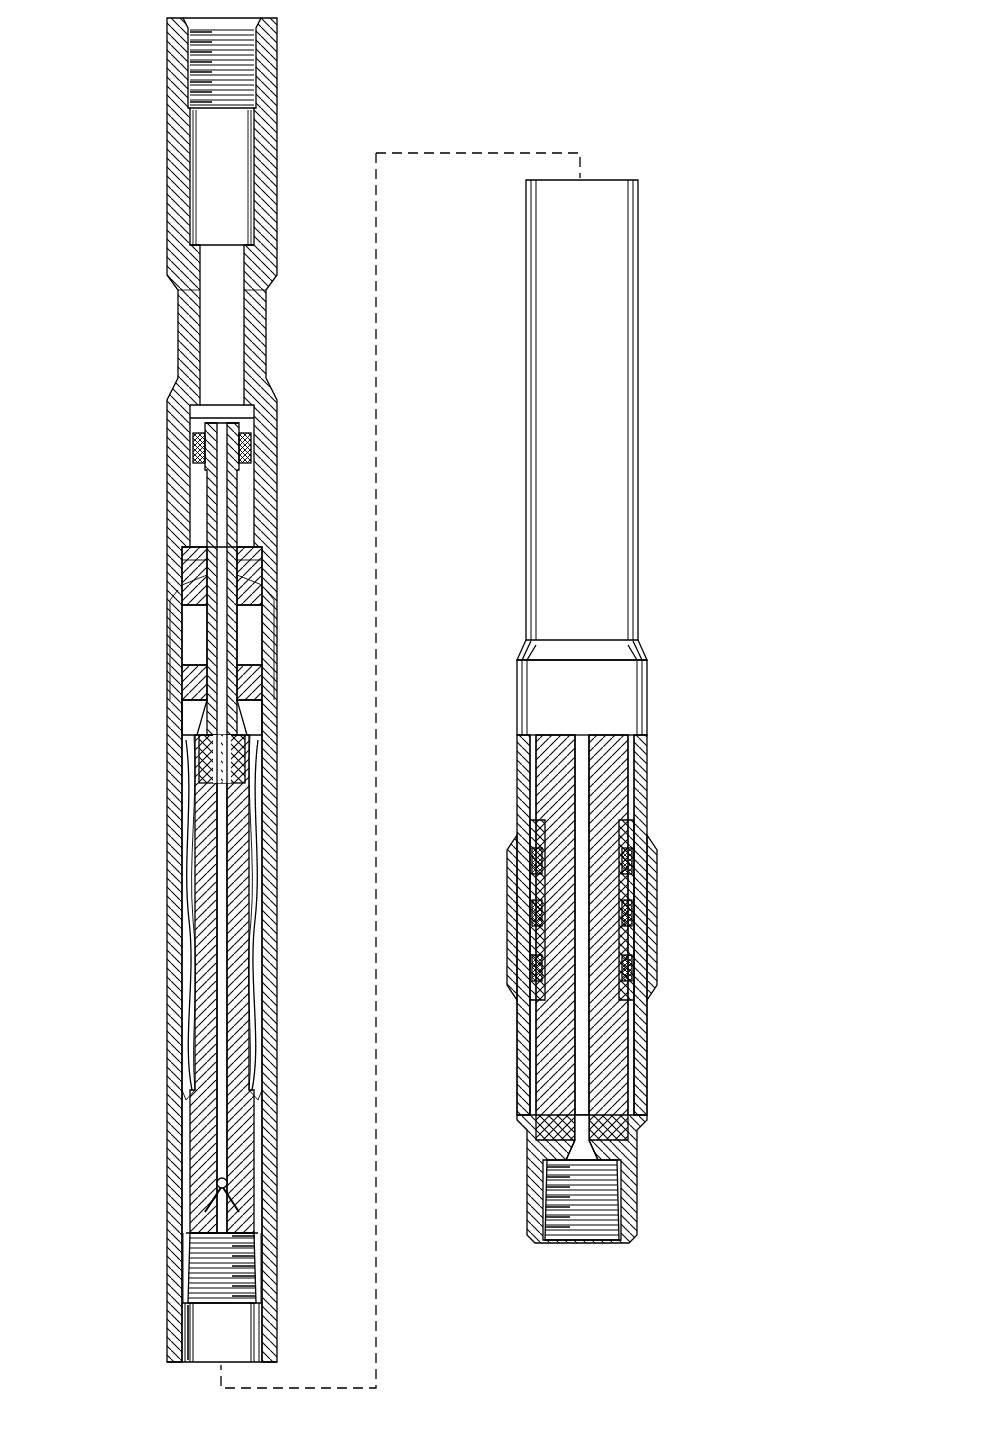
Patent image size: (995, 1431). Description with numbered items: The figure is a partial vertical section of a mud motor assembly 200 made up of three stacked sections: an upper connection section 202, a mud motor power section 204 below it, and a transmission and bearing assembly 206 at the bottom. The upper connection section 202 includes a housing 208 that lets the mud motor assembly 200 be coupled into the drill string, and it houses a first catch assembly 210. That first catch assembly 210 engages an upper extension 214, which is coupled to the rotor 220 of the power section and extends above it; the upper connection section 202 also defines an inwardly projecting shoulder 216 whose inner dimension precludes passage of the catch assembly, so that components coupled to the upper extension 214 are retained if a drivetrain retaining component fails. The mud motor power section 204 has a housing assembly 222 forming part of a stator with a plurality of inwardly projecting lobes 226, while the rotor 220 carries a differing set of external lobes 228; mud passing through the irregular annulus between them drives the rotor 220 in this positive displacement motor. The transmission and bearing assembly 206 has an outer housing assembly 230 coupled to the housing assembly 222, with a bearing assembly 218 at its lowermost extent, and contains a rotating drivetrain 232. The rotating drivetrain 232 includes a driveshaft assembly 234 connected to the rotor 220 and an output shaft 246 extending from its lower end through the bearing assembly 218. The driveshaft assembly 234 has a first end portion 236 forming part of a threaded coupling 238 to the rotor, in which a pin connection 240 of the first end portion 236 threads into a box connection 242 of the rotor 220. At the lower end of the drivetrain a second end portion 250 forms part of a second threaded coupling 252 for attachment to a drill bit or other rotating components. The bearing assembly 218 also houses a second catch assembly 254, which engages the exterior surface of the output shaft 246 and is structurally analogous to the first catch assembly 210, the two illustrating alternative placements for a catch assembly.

The mud motor assembly 200 is at (92, 308).
The upper connection section 202 is at (156, 440).
The mud motor power section 204 is at (93, 1308).
The transmission and bearing assembly 206 is at (478, 180).
The housing 208 is at (267, 346).
The first catch assembly 210 is at (245, 422).
The upper extension 214 is at (236, 490).
The inwardly projecting shoulder 216 is at (248, 568).
The bearing assembly 218 is at (732, 809).
The rotor 220 is at (240, 806).
The housing assembly 222 is at (273, 910).
The inwardly projecting lobes 226 is at (258, 993).
The external lobes 228 is at (195, 946).
The outer housing assembly 230 is at (657, 680).
The rotating drivetrain 232 is at (612, 770).
The driveshaft assembly 234 is at (244, 1342).
The first end portion 236 is at (186, 1322).
The threaded coupling 238 is at (256, 1299).
The pin connection 240 is at (248, 1252).
The box connection 242 is at (192, 1259).
The output shaft 246 is at (608, 1048).
The second end portion 250 is at (623, 1150).
The second threaded coupling 252 is at (616, 1212).
The second catch assembly 254 is at (640, 960).